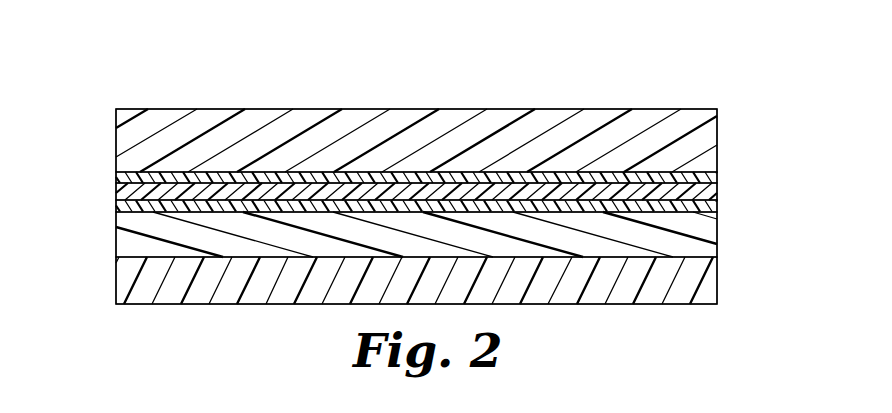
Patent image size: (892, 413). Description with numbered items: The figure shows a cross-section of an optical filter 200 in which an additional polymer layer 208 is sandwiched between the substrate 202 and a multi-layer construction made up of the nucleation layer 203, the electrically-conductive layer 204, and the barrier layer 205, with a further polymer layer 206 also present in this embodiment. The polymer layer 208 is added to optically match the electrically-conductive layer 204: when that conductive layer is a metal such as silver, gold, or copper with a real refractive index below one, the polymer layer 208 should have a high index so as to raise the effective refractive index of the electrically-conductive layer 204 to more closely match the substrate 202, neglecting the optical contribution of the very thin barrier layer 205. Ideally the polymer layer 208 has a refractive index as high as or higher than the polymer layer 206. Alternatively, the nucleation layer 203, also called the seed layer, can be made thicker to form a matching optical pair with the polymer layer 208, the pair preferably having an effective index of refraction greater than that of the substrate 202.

The optical filter 200 is at (690, 70).
The substrate 202 is at (193, 292).
The nucleation layer 203 is at (120, 207).
The electrically-conductive layer 204 is at (120, 191).
The barrier layer 205 is at (120, 177).
The polymer layer 206 is at (165, 120).
The polymer layer 208 is at (126, 243).